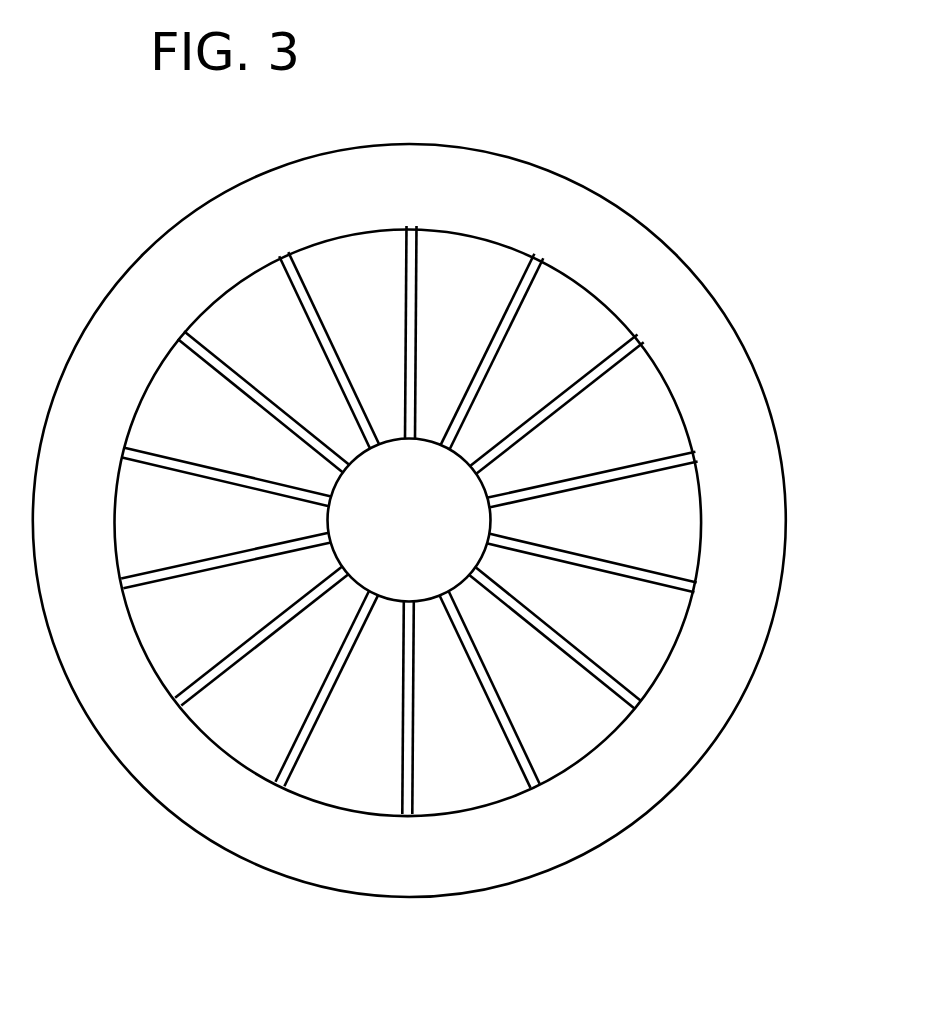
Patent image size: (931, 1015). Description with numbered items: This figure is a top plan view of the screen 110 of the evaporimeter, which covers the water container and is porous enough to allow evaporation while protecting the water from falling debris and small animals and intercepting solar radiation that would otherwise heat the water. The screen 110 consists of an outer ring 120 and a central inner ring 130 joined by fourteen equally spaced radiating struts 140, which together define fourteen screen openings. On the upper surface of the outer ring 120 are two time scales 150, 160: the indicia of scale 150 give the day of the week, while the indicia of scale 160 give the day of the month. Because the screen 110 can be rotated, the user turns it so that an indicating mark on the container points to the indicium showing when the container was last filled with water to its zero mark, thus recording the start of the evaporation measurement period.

The screen 110 is at (172, 223).
The outer ring 120 is at (428, 870).
The inner ring 130 is at (425, 438).
The radiating struts 140 is at (223, 683).
The time scale (day of the week) 150 is at (723, 480).
The time scale (day of the month) 160 is at (713, 313).